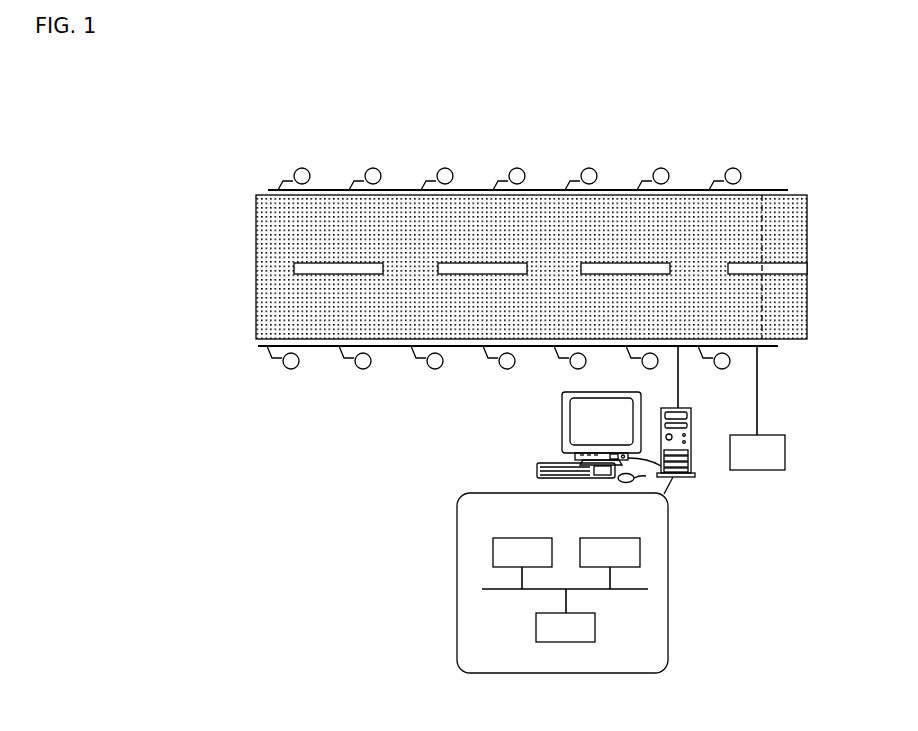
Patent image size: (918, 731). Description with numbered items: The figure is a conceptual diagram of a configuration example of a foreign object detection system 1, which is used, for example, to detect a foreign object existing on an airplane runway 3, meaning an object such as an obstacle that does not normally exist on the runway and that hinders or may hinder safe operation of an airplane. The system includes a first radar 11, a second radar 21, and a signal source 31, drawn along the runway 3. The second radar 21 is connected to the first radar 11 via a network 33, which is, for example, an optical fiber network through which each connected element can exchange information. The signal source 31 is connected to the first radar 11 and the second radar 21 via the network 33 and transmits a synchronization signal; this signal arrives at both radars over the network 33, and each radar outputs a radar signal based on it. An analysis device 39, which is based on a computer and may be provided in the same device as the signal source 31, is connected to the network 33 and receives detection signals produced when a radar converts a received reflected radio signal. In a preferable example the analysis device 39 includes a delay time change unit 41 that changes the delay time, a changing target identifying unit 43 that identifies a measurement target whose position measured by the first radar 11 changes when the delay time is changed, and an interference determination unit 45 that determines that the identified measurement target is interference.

The foreign object detection system 1 is at (559, 135).
The airplane runway 3 is at (741, 205).
The first radar 11 is at (448, 176).
The second radar 21 is at (362, 368).
The signal source 31 is at (770, 441).
The network 33 is at (690, 190).
The analysis device 39 is at (691, 413).
The delay time change unit 41 is at (522, 537).
The changing target identifying unit 43 is at (610, 537).
The interference determination unit 45 is at (564, 645).